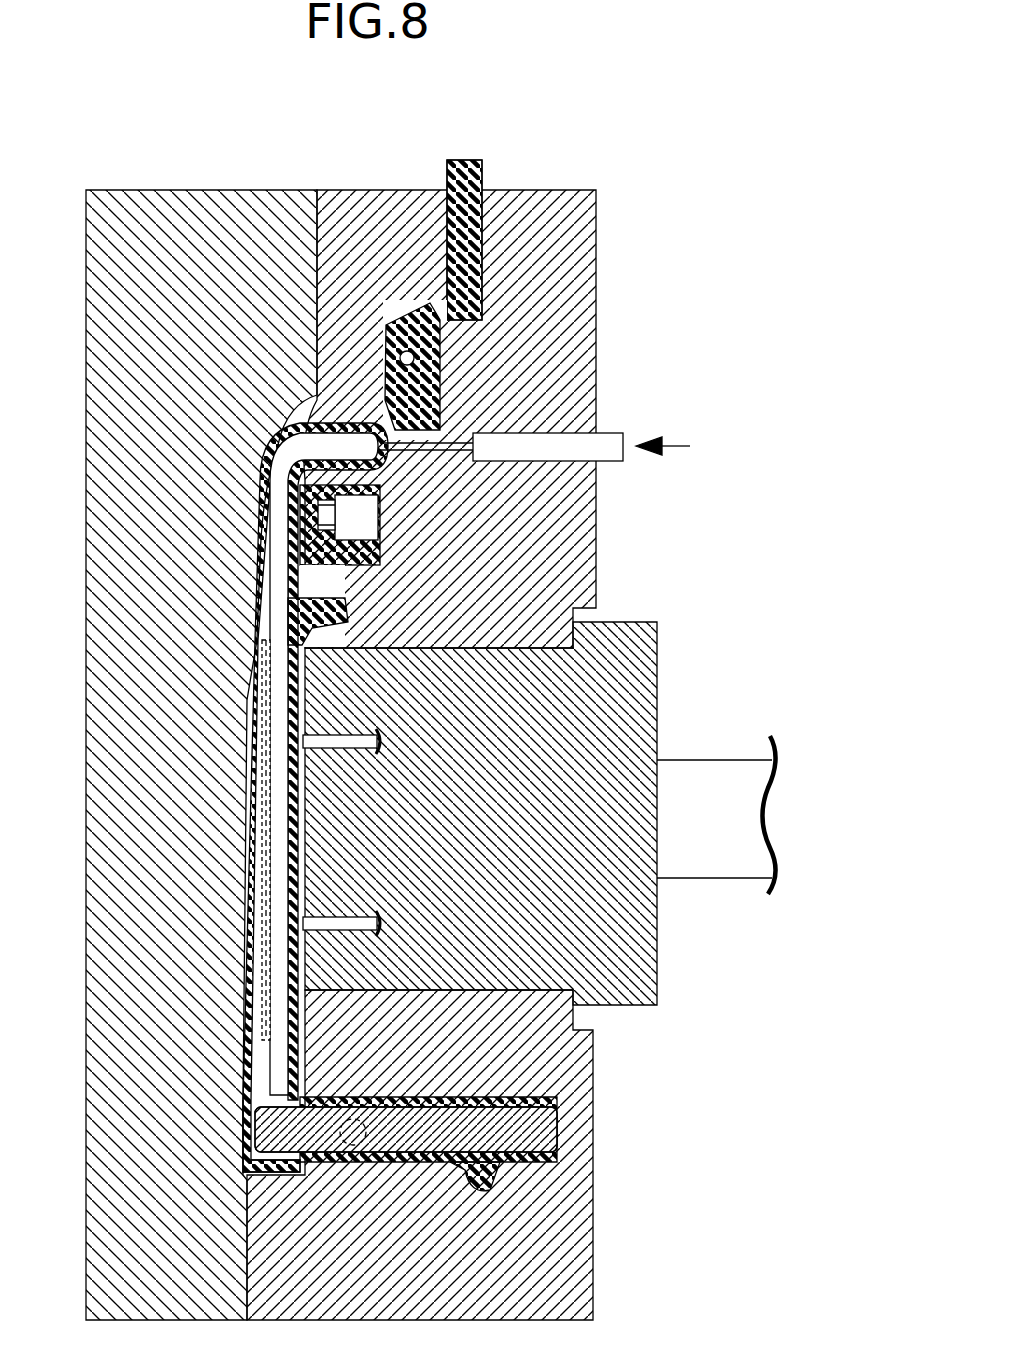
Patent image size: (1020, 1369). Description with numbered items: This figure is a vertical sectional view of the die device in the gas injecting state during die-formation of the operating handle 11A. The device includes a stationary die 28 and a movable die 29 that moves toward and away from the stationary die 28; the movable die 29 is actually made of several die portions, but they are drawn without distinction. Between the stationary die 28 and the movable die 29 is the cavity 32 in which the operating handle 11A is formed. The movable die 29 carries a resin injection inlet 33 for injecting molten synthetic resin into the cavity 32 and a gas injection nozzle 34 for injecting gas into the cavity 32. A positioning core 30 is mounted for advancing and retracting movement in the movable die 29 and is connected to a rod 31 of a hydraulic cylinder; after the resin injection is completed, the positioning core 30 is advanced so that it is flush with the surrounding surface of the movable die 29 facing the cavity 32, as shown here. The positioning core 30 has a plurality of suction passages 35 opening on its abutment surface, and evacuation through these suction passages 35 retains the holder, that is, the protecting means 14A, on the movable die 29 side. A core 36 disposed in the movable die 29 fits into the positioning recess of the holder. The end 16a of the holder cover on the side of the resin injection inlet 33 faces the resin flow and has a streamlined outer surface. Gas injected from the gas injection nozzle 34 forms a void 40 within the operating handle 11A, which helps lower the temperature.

The stationary die 28 is at (172, 203).
The movable die 29 is at (345, 205).
The positioning core 30 is at (630, 692).
The rod 31 is at (714, 800).
The cavity 32 is at (268, 452).
The resin injection inlet 33 is at (468, 185).
The gas injection nozzle 34 is at (448, 440).
The suction passages 35 is at (340, 748).
The core 36 is at (475, 1118).
The void 40 is at (252, 1042).
The operating handle 11A is at (240, 728).
The protecting means 14A is at (240, 808).
The end of the holder cover 16a is at (262, 608).